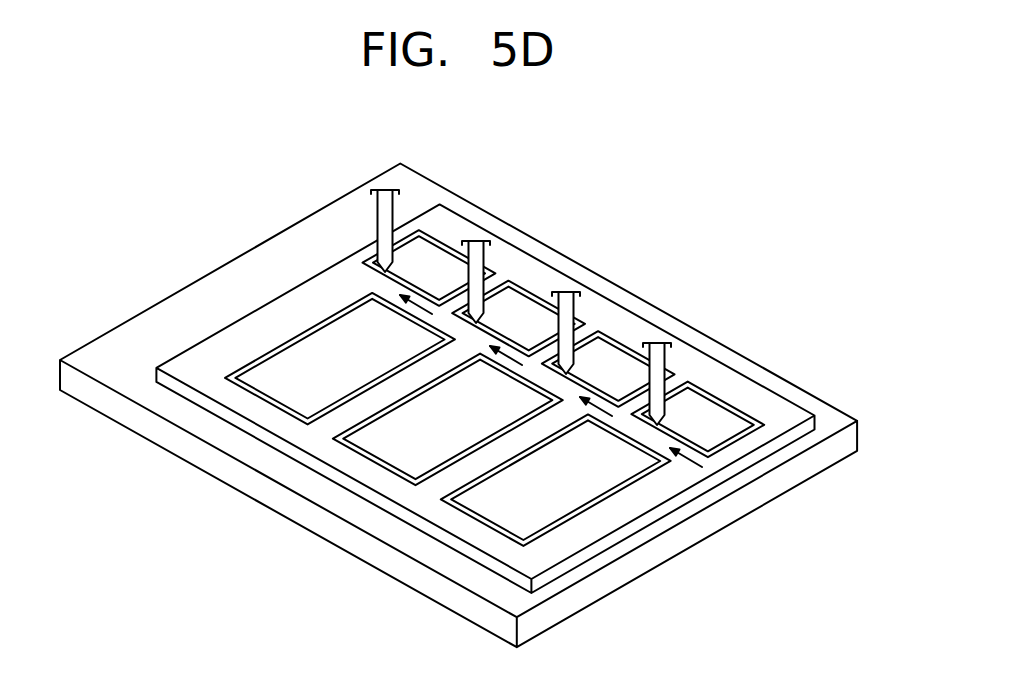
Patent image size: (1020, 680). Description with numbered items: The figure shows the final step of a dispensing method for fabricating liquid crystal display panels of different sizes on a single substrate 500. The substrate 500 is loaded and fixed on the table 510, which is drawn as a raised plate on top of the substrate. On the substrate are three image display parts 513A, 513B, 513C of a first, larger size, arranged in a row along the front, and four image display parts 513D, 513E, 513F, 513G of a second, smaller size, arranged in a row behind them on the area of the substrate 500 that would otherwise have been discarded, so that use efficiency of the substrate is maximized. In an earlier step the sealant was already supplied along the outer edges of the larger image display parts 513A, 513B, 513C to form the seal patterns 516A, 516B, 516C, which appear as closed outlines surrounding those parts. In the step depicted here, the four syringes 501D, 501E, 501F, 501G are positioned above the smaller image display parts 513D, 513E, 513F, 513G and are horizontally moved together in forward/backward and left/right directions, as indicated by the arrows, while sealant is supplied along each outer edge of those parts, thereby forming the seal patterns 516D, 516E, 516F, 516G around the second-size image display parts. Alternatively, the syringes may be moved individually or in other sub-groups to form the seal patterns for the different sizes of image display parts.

The substrate 500 is at (800, 440).
The table 510 is at (822, 397).
The image display part 513A is at (365, 364).
The image display part 513B is at (470, 424).
The image display part 513C is at (577, 486).
The image display part 513D is at (446, 276).
The image display part 513E is at (531, 324).
The image display part 513F is at (623, 376).
The image display part 513G is at (716, 428).
The seal pattern 516A is at (272, 405).
The seal pattern 516B is at (378, 465).
The seal pattern 516C is at (485, 527).
The seal pattern 516D is at (445, 245).
The seal pattern 516E is at (538, 293).
The seal pattern 516F is at (628, 348).
The seal pattern 516G is at (718, 396).
The syringe 501D is at (393, 212).
The syringe 501E is at (484, 262).
The syringe 501F is at (575, 310).
The syringe 501G is at (666, 362).